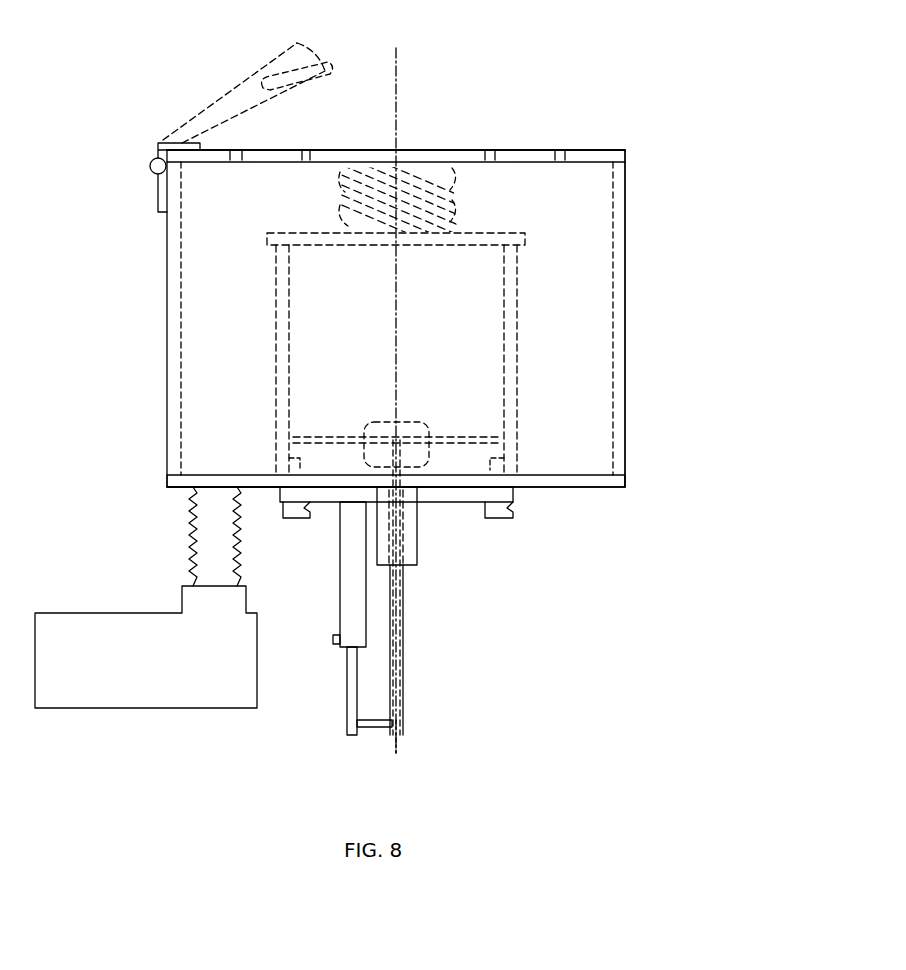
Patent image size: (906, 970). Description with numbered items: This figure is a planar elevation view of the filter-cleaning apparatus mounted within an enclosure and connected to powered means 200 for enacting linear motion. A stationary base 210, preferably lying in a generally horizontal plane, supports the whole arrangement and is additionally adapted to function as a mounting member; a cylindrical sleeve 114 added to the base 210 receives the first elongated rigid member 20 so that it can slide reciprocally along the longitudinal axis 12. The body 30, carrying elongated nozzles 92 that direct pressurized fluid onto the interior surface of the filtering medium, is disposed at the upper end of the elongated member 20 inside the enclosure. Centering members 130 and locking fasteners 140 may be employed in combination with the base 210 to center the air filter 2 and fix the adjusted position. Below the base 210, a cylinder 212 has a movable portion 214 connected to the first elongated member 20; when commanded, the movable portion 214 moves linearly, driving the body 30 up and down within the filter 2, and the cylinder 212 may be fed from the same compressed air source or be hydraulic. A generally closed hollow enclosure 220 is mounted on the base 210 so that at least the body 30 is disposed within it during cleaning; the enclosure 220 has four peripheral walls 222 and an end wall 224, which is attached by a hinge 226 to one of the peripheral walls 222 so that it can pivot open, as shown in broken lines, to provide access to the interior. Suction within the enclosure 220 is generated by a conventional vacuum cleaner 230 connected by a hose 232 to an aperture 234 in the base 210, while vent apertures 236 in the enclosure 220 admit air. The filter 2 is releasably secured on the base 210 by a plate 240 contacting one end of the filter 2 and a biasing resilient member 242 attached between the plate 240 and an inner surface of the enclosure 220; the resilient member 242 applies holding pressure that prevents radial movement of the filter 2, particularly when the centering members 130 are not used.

The air filter 2 is at (518, 327).
The longitudinal axis 12 is at (398, 745).
The first elongated rigid member 20 is at (402, 710).
The body 30 is at (404, 415).
The elongated nozzles 92 is at (313, 443).
The cylindrical sleeve 114 is at (418, 548).
The centering members 130 is at (529, 466).
The locking fasteners 140 is at (502, 520).
The powered means 200 is at (742, 237).
The base 210 is at (588, 480).
The cylinder 212 is at (348, 582).
The movable portion 214 is at (347, 723).
The hollow enclosure 220 is at (618, 327).
The peripheral walls 222 is at (625, 204).
The end wall 224 is at (225, 93).
The hinge 226 is at (151, 163).
The vacuum cleaner 230 is at (90, 635).
The hose 232 is at (210, 547).
The aperture 234 is at (198, 478).
The vent apertures 236 is at (302, 153).
The plate 240 is at (507, 230).
The biasing resilient member 242 is at (308, 78).